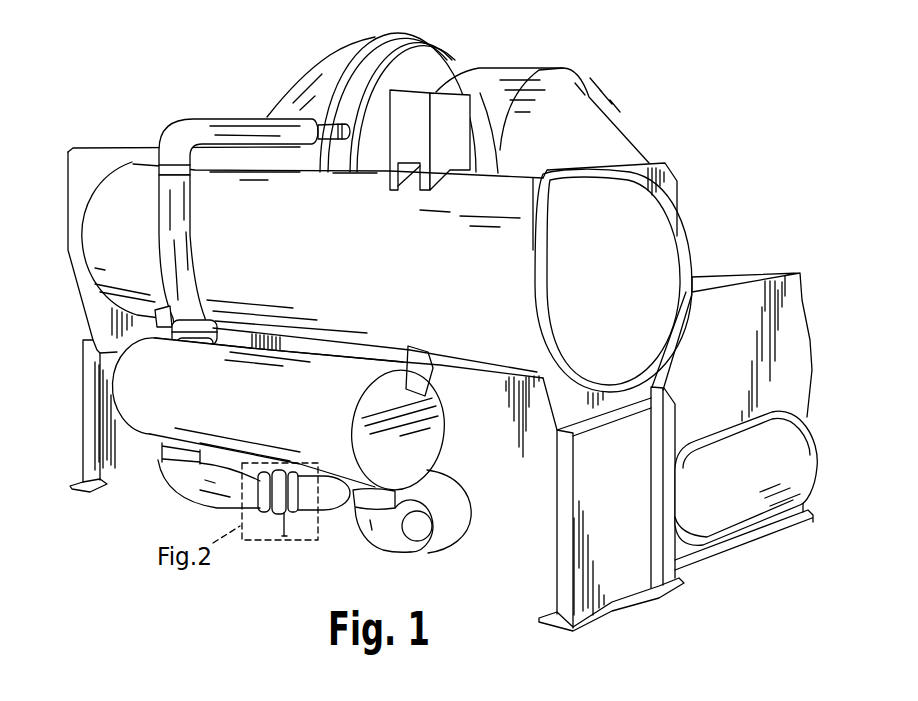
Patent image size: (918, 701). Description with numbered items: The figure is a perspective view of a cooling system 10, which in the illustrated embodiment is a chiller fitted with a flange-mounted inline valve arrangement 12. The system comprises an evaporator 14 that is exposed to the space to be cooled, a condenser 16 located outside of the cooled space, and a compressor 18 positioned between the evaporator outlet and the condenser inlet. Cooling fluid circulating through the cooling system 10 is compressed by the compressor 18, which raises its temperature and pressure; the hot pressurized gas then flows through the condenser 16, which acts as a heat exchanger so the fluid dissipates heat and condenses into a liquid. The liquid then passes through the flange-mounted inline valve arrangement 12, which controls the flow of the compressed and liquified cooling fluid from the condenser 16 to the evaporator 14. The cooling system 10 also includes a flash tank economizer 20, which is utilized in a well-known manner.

The cooling system 10 is at (118, 73).
The flange-mounted inline valve arrangement 12 is at (303, 516).
The evaporator 14 is at (770, 457).
The condenser 16 is at (640, 247).
The compressor 18 is at (433, 33).
The flash tank economizer 20 is at (475, 528).